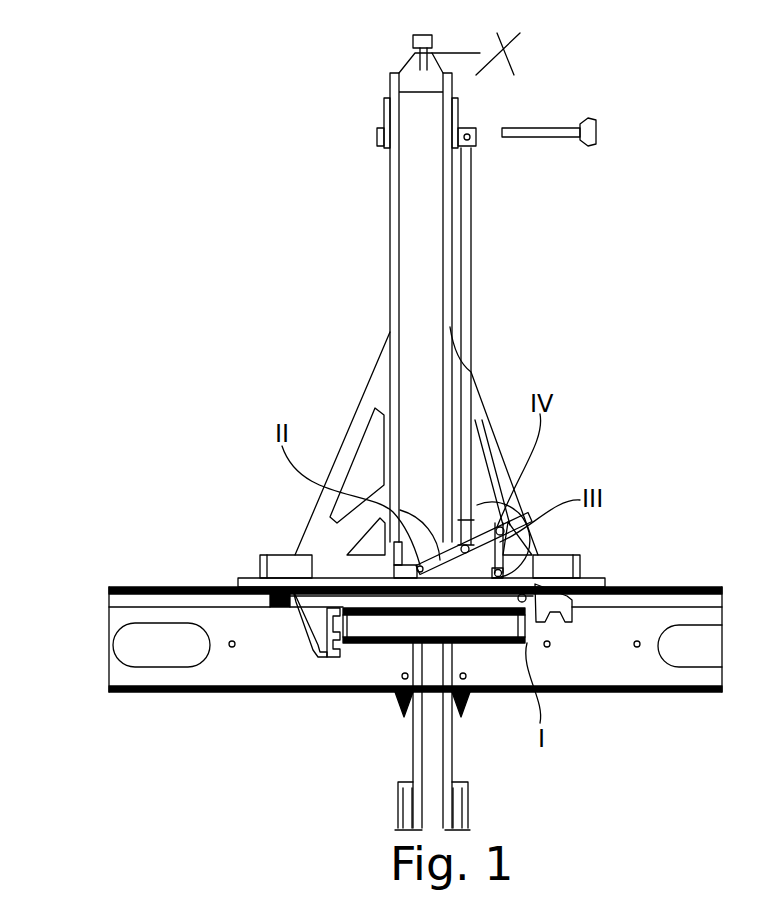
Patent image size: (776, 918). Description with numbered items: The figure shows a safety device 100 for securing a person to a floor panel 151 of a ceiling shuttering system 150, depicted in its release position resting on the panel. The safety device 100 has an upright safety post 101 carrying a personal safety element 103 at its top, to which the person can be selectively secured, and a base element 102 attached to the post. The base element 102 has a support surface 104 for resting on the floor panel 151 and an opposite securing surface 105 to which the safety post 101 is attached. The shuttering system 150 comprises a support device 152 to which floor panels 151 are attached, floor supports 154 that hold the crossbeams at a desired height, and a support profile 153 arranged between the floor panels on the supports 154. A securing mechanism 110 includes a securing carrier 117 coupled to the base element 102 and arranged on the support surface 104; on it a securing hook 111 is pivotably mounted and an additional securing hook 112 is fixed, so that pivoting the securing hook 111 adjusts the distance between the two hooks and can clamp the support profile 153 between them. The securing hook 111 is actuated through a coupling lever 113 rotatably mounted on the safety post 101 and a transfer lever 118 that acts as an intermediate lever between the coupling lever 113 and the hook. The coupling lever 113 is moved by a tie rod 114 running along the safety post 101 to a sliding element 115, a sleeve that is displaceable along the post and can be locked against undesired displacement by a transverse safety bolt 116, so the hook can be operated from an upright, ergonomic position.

The safety device 100 is at (336, 161).
The safety post 101 is at (390, 305).
The base element 102 is at (250, 580).
The personal safety element 103 is at (503, 62).
The support surface 104 is at (313, 591).
The securing surface 105 is at (282, 576).
The securing mechanism 110 is at (607, 524).
The securing hook 111 is at (558, 600).
The additional securing hook 112 is at (317, 645).
The coupling lever 113 is at (417, 568).
The tie rod 114 is at (469, 232).
The sliding element 115 is at (457, 127).
The safety bolt 116 is at (583, 140).
The securing carrier 117 is at (385, 598).
The transfer lever 118 is at (500, 528).
The shuttering system 150 is at (219, 751).
The floor panel 151 is at (153, 587).
The support device 152 is at (623, 667).
The support profile 153 is at (485, 647).
The floor support 154 is at (435, 770).